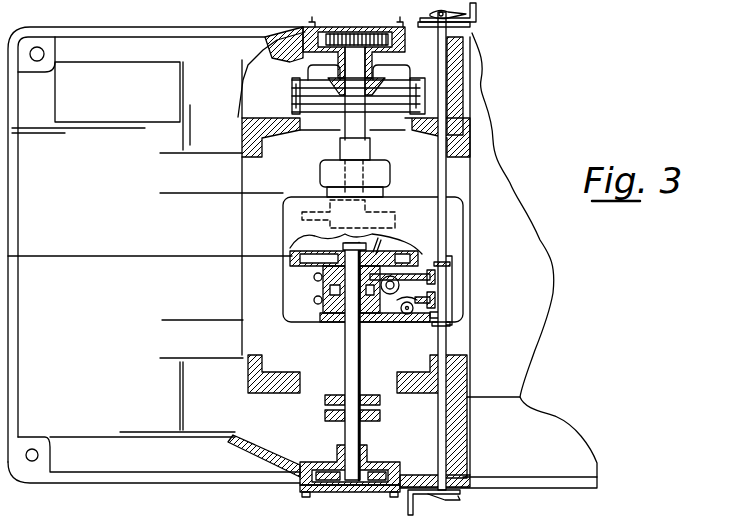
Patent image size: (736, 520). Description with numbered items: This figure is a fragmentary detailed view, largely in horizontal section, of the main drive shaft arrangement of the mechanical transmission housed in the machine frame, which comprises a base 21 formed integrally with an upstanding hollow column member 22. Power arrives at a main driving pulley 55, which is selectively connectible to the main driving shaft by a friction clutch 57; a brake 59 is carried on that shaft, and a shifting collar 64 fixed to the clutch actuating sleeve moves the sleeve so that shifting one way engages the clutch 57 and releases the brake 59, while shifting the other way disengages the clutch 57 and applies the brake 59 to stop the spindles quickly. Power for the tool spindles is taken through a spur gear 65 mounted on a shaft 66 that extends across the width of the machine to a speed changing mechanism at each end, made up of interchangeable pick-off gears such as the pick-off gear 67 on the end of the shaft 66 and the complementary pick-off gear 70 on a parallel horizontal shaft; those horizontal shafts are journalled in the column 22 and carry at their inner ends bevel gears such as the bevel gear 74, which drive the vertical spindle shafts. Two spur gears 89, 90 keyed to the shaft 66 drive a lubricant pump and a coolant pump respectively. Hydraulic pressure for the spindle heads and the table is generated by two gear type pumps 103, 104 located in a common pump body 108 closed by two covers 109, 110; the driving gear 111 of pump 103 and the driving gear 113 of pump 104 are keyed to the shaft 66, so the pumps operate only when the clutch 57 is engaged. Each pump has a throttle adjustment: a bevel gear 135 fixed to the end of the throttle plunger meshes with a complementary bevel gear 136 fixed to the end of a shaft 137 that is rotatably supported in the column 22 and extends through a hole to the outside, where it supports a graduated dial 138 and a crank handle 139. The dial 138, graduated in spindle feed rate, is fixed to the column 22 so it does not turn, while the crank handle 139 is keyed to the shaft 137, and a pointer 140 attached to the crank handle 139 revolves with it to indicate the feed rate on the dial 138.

The base 21 is at (85, 458).
The column member 22 is at (278, 470).
The main driving pulley 55 is at (420, 82).
The friction clutch 57 is at (300, 55).
The brake 59 is at (318, 170).
The shifting collar 64 is at (322, 212).
The spur gear 65 is at (296, 258).
The shaft 66 is at (345, 350).
The pick-off gear 67 is at (325, 488).
The pick-off gear 70 is at (356, 27).
The bevel gear 74 is at (398, 84).
The spur gear 89 is at (328, 416).
The spur gear 90 is at (328, 400).
The gear type pump 103 is at (306, 281).
The gear type pump 104 is at (305, 304).
The pump body 108 is at (399, 316).
The cover 109 is at (310, 243).
The cover 110 is at (321, 322).
The driving gear 111 is at (381, 254).
The driving gear 113 is at (374, 322).
The bevel gear 135 is at (440, 291).
The bevel gear 136 is at (452, 268).
The shaft 137 is at (446, 108).
The graduated dial 138 is at (472, 23).
The crank handle 139 is at (478, 9).
The pointer 140 is at (432, 13).